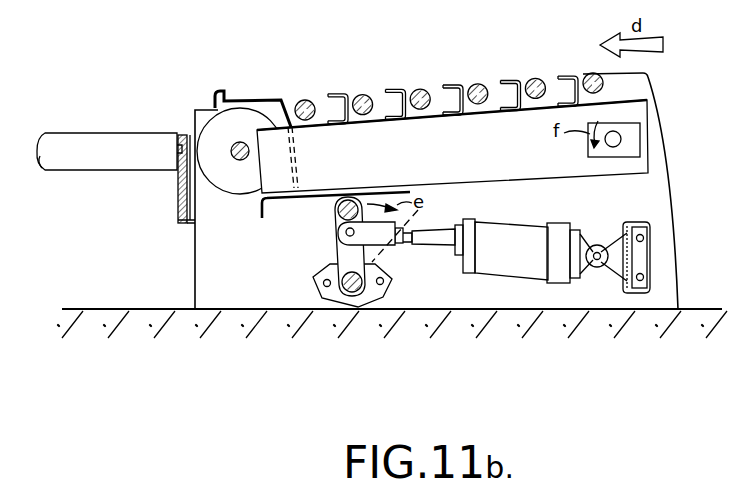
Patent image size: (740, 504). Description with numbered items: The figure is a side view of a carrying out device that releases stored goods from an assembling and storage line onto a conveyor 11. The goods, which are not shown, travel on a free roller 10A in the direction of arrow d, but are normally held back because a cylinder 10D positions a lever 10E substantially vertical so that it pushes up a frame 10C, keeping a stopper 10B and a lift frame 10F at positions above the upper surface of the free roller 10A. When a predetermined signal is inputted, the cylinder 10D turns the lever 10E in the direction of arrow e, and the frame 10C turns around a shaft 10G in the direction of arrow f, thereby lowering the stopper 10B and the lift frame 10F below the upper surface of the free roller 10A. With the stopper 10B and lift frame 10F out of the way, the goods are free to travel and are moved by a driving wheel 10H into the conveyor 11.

The conveyor 11 is at (84, 133).
The driving wheel 10H is at (212, 132).
The stopper 10B is at (262, 88).
The lift frame 10F is at (378, 91).
The free roller 10A is at (530, 85).
The frame 10C is at (313, 188).
The shaft 10G is at (623, 138).
The cylinder 10D is at (511, 223).
The lever 10E is at (334, 258).